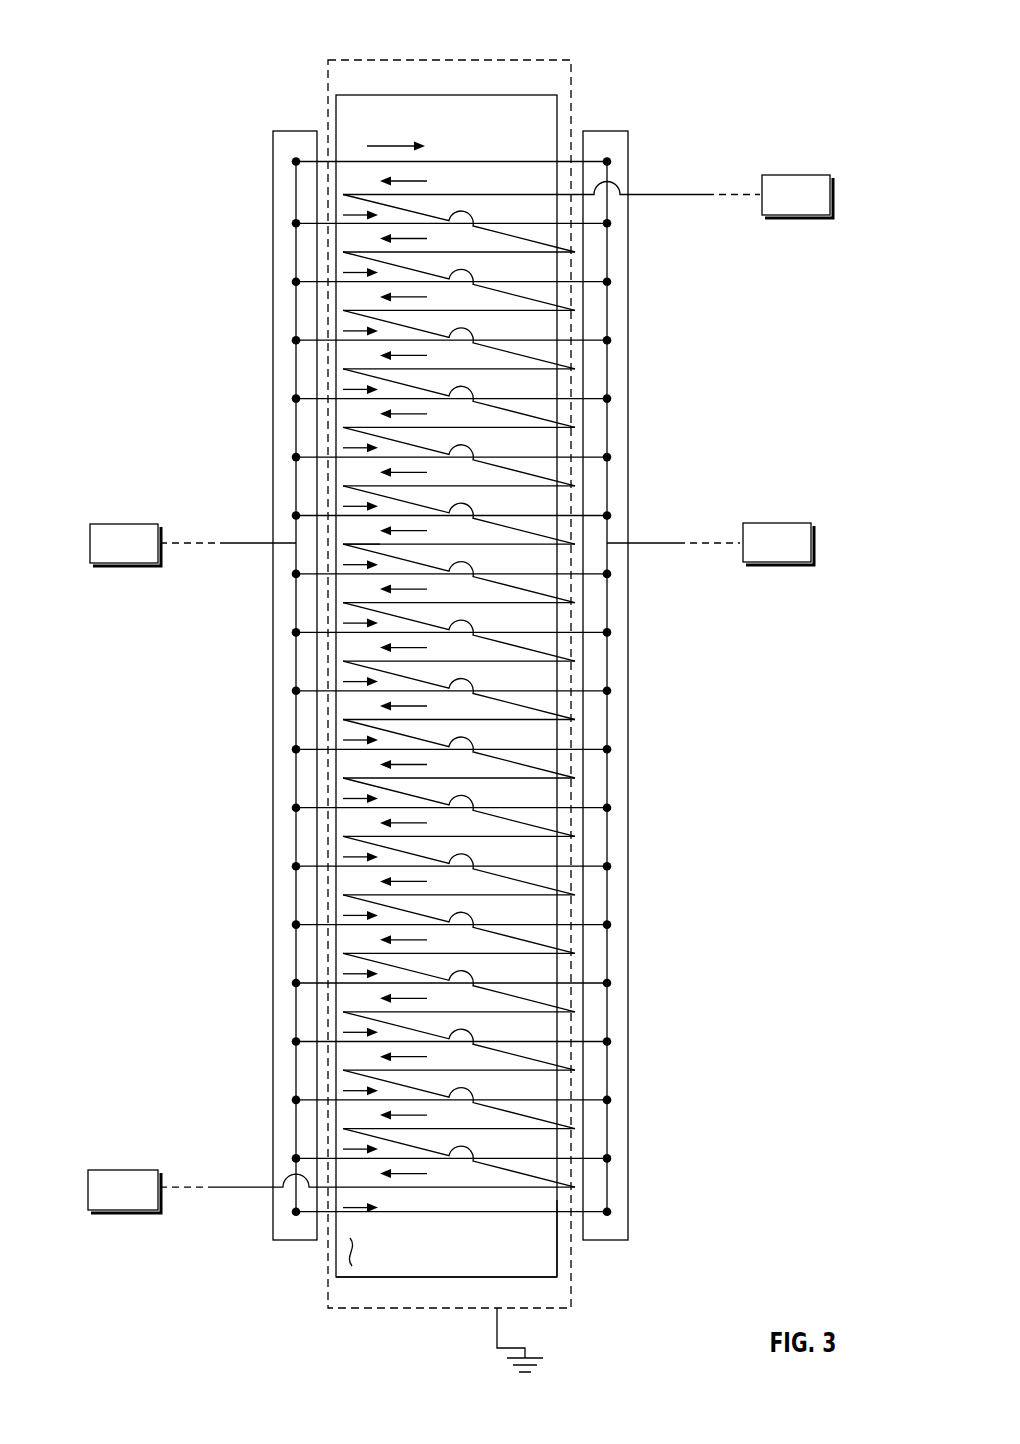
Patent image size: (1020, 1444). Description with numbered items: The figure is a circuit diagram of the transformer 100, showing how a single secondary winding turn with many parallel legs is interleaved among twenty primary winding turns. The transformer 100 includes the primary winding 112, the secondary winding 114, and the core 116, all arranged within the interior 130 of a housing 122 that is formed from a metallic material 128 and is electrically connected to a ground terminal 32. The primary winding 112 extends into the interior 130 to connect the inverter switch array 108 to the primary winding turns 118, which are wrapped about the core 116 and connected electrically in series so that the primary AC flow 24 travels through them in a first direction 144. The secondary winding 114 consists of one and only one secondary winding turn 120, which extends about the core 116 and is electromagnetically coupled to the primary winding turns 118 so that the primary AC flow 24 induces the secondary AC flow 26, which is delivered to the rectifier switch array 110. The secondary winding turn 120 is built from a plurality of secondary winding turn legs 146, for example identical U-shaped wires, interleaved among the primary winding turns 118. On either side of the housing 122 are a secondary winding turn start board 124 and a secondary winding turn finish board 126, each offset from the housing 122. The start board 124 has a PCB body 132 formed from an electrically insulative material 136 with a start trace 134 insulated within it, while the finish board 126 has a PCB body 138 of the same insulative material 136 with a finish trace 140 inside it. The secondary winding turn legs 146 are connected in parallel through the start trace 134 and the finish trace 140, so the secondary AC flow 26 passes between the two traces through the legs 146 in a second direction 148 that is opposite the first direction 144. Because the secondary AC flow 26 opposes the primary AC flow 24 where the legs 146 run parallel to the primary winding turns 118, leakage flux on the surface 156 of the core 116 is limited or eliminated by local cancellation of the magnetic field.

The primary AC flow 24 is at (458, 178).
The secondary AC flow 26 is at (355, 331).
The ground terminal 32 is at (535, 1350).
The transformer 100 is at (134, 1216).
The inverter switch array 108 is at (782, 209).
The rectifier switch array 110 is at (110, 557).
The primary winding 112 is at (348, 579).
The secondary winding 114 is at (490, 167).
The core 116 is at (550, 1257).
The primary winding turns 118 is at (531, 194).
The secondary winding turn 120 is at (550, 396).
The housing 122 is at (325, 1293).
The secondary winding turn start board 124 is at (273, 262).
The secondary winding turn finish board 126 is at (628, 375).
The metallic material 128 is at (517, 1300).
The interior 130 is at (370, 1304).
The PCB body 132 is at (281, 740).
The start trace 134 is at (296, 838).
The electrically insulative material 136 is at (290, 1108).
The PCB body 138 is at (612, 736).
The finish trace 140 is at (607, 838).
The first direction 144 is at (376, 179).
The secondary winding turn legs 146 is at (398, 144).
The second direction 148 is at (352, 344).
The surface 156 is at (337, 1250).